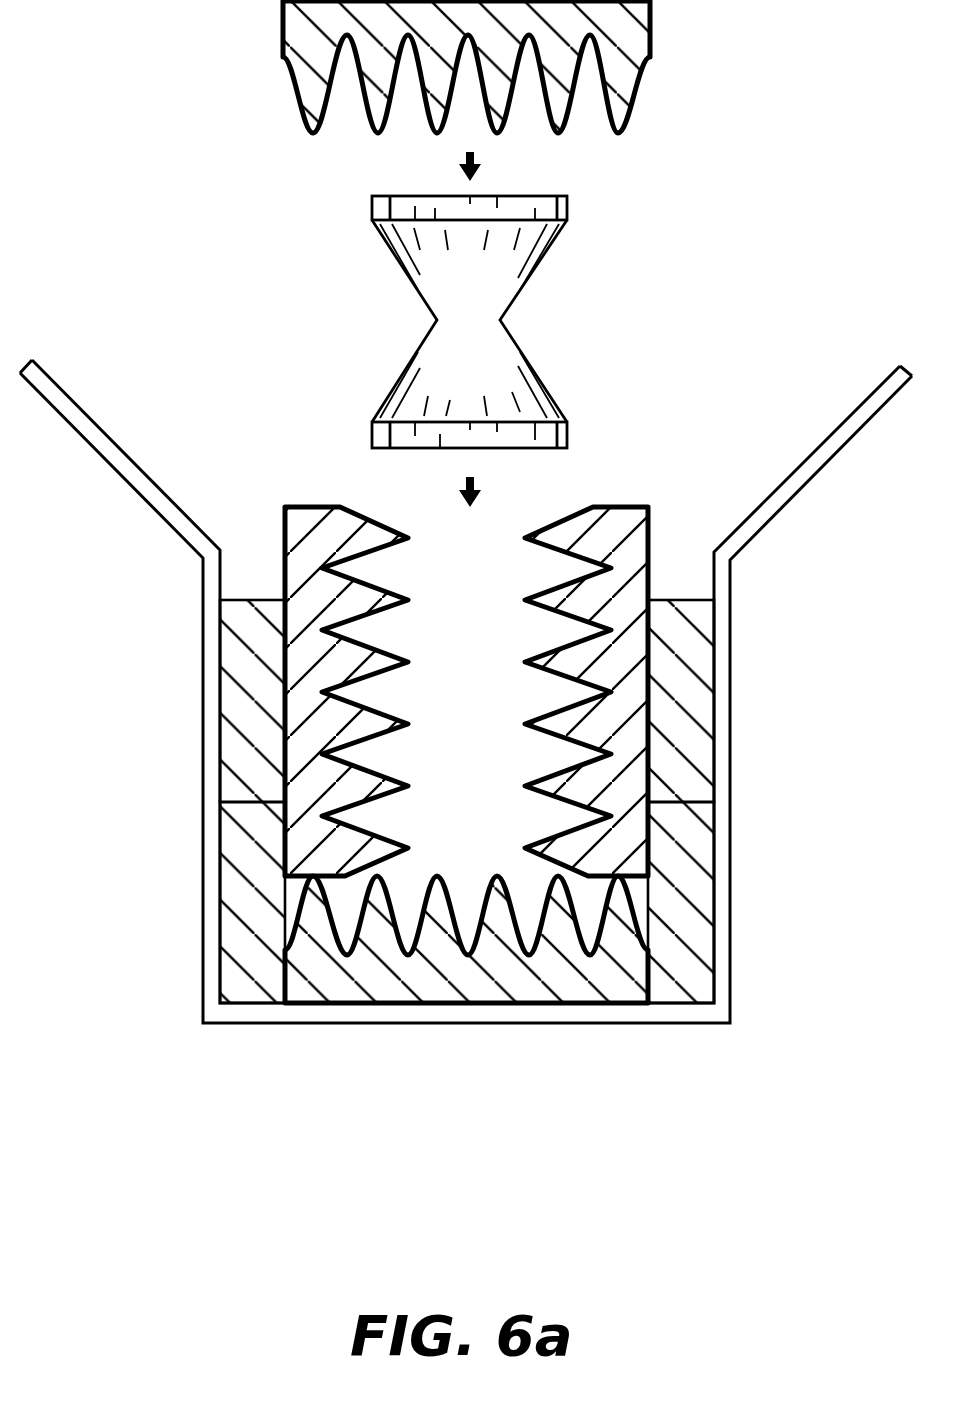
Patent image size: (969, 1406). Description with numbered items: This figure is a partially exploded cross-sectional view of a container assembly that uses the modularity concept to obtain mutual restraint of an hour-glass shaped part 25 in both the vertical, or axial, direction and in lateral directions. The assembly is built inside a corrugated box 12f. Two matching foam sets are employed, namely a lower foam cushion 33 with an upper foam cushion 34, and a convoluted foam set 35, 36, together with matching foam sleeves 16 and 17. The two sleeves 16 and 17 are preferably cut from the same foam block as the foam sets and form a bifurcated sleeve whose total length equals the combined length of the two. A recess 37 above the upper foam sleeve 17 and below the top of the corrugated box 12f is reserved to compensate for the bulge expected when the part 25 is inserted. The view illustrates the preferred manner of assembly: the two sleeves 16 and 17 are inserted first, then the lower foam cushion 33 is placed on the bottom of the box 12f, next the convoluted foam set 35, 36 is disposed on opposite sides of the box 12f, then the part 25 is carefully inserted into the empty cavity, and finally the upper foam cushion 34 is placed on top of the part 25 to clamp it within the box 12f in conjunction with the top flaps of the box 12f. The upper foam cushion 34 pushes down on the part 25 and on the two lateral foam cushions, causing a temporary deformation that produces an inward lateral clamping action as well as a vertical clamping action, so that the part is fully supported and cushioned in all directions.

The corrugated box 12f is at (620, 1023).
The foam sleeve 16 is at (702, 904).
The upper foam sleeve 17 is at (700, 705).
The hour-glass shaped part 25 is at (557, 404).
The lower foam cushion 33 is at (375, 1003).
The upper foam cushion 34 is at (652, 42).
The convoluted foam set 35 is at (310, 507).
The convoluted foam set 36 is at (638, 507).
The recess 37 is at (681, 565).